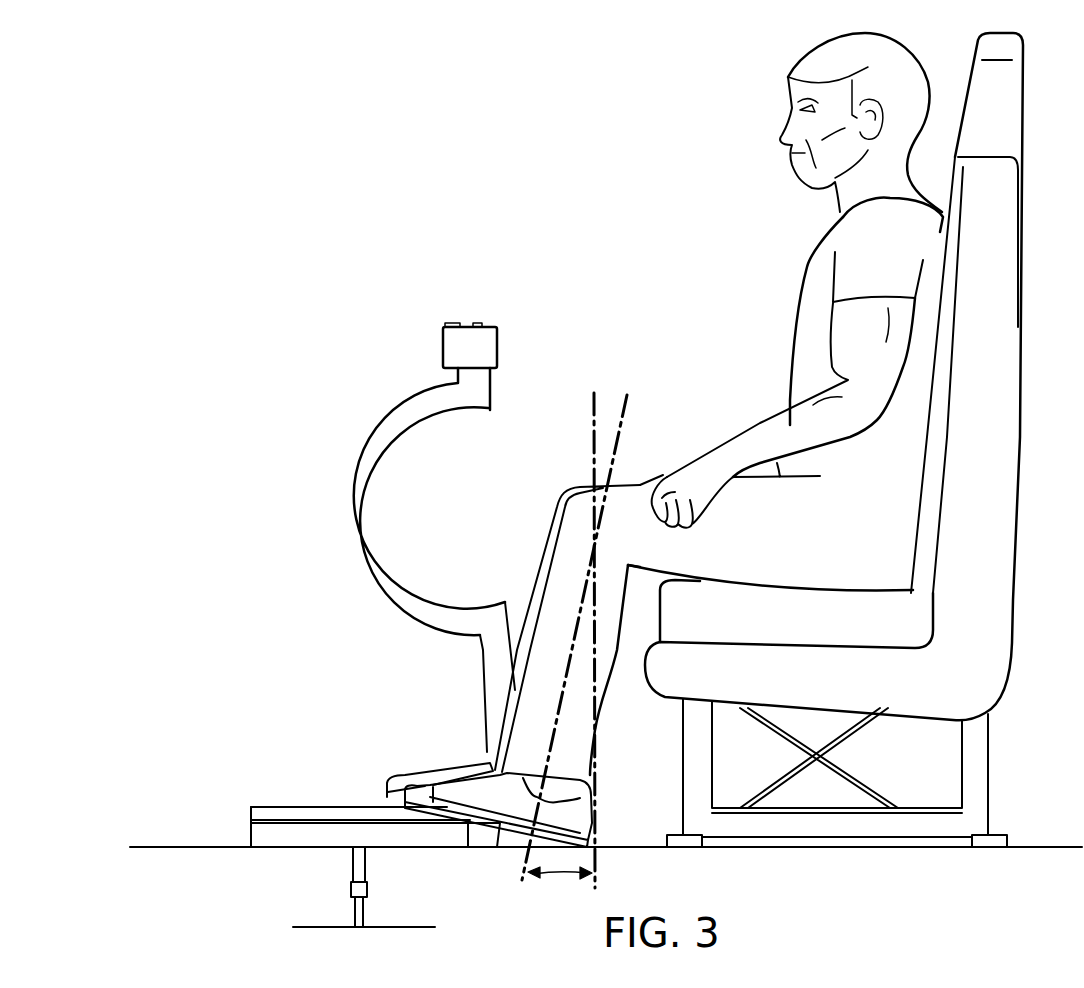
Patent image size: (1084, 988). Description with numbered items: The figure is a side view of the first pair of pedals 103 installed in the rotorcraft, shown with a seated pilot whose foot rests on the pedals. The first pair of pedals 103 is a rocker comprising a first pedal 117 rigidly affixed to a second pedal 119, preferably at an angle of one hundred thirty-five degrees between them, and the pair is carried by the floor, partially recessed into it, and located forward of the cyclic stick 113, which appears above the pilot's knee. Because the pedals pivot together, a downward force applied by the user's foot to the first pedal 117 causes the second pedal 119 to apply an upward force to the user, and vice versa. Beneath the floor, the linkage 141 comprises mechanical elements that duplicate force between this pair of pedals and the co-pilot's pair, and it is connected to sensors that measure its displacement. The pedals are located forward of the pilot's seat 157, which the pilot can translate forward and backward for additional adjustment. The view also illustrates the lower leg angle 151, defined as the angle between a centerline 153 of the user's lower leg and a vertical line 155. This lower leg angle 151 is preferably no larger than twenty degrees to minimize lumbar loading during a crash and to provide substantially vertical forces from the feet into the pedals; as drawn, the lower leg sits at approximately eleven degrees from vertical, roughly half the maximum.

The first pair of pedals 103 is at (236, 774).
The cyclic stick 113 is at (443, 350).
The first pedal 117 is at (258, 834).
The second pedal 119 is at (315, 806).
The linkage 141 is at (353, 873).
The lower leg angle 151 is at (560, 874).
The centerline of the user's lower leg 153 is at (621, 423).
The vertical line 155 is at (593, 420).
The pilot's seat 157 is at (1014, 603).